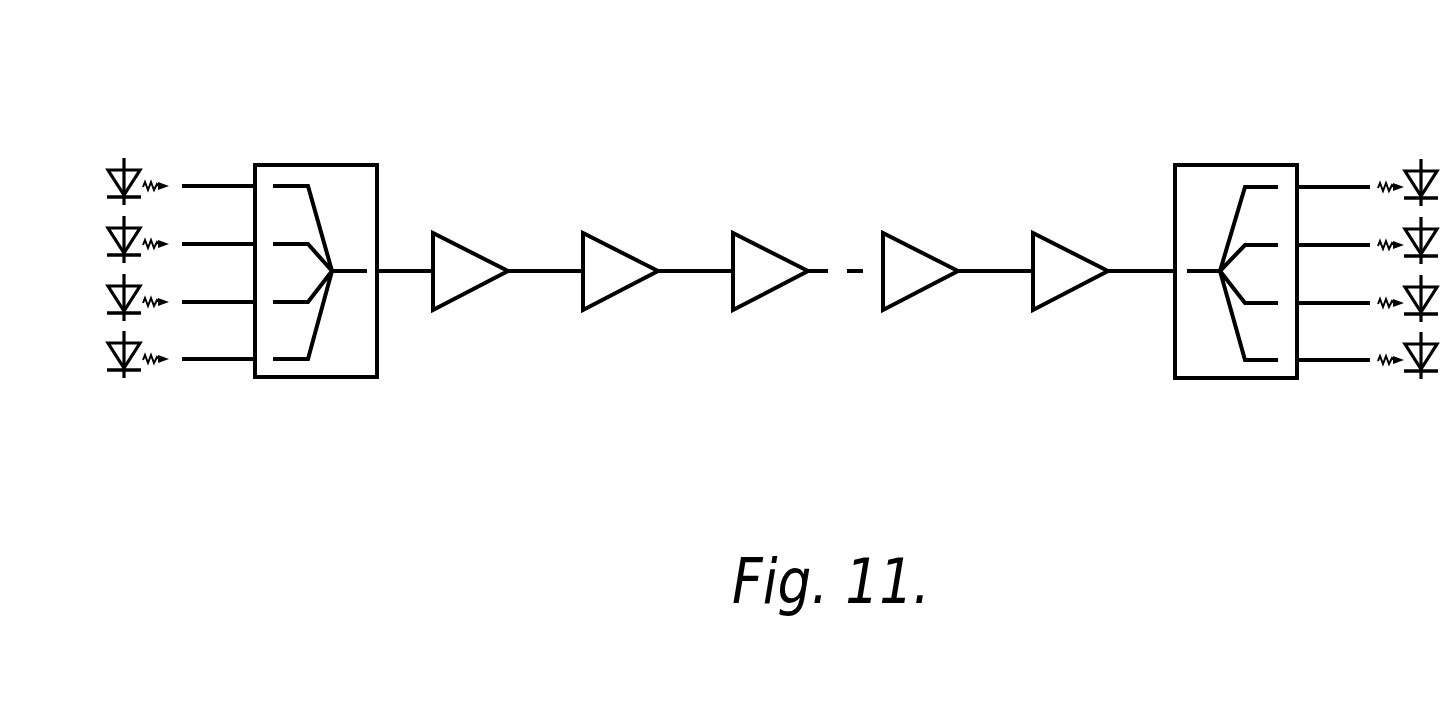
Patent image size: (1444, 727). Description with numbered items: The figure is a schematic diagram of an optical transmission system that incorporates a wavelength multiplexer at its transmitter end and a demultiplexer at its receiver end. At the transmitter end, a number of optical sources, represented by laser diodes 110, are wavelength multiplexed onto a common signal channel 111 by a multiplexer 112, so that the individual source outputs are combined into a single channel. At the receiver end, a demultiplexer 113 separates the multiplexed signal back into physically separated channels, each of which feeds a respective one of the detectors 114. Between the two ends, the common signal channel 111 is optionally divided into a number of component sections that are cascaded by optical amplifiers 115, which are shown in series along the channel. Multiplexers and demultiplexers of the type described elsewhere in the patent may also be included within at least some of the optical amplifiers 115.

The laser diodes 110 is at (125, 233).
The common signal channel 111 is at (397, 271).
The multiplexer 112 is at (340, 200).
The demultiplexer 113 is at (1203, 203).
The detectors 114 is at (1420, 233).
The optical amplifiers 115 is at (452, 290).